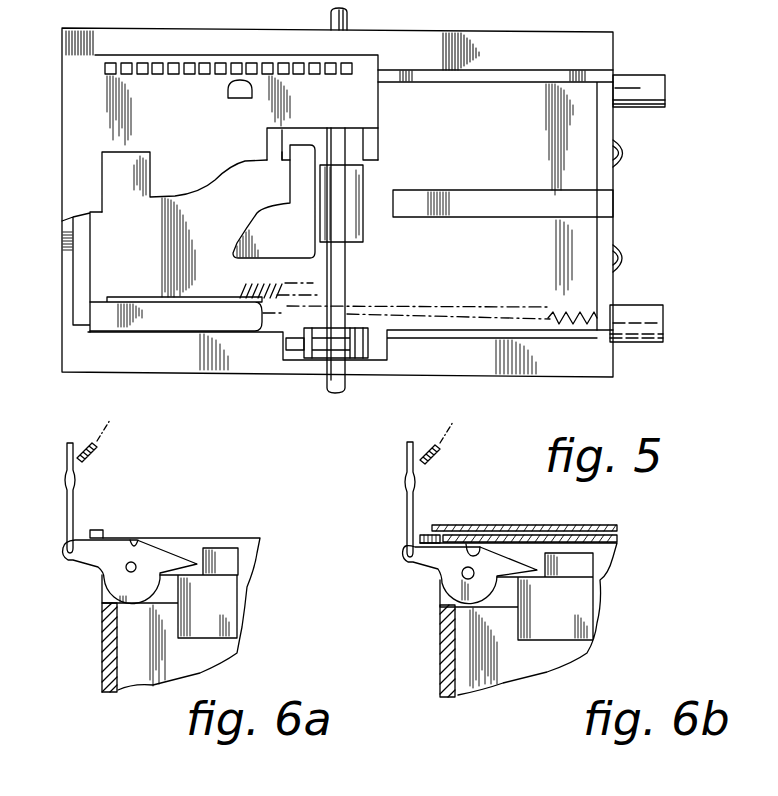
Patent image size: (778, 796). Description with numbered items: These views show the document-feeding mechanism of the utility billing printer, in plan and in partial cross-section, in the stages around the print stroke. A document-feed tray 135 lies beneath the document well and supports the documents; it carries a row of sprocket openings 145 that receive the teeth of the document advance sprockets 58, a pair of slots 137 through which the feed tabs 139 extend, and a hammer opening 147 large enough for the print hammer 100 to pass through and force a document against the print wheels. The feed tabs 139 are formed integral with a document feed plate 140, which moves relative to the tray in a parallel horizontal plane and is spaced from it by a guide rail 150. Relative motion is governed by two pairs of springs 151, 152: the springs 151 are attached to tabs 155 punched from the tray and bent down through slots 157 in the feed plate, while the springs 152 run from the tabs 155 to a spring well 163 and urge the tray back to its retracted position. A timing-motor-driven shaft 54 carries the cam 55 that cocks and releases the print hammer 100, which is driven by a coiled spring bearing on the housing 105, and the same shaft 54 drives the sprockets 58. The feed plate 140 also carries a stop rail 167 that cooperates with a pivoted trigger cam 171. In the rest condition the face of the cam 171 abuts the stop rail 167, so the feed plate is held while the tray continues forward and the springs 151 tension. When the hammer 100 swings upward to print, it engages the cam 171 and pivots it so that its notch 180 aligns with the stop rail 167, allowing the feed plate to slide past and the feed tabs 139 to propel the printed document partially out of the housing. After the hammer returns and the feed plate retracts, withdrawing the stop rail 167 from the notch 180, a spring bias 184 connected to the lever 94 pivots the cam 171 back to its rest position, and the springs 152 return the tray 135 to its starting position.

In FIG. 5C, the shaft 54 is at (346, 263).
In FIG. 5C, the cam 55 is at (358, 225).
In FIG. 5C, the document advance sprockets 58 is at (358, 328).
In FIG. 6A, the lever 94 is at (67, 510).
In FIG. 6B, the lever 94 is at (415, 507).
In FIG. 5C, the print hammer 100 is at (302, 245).
In FIG. 6A, the print hammer 100 is at (222, 603).
In FIG. 6B, the print hammer 100 is at (590, 597).
In FIG. 5C, the housing 105 is at (62, 322).
In FIG. 6A, the housing 105 is at (102, 648).
In FIG. 6B, the housing 105 is at (440, 655).
In FIG. 5C, the document-feed tray 135 is at (72, 92).
In FIG. 6B, the document-feed tray 135 is at (578, 528).
In FIG. 5C, the slots 137 is at (297, 133).
In FIG. 5C, the feed tabs 139 is at (282, 160).
In FIG. 5C, the document feed plate 140 is at (103, 255).
In FIG. 6B, the document feed plate 140 is at (618, 538).
In FIG. 5C, the sprocket openings 145 is at (270, 68).
In FIG. 5C, the hammer opening 147 is at (118, 160).
In FIG. 5C, the guide rail 150 is at (545, 195).
In FIG. 5C, the springs 151 is at (286, 288).
In FIG. 5C, the springs 152 is at (550, 314).
In FIG. 5C, the tabs 155 is at (228, 93).
In FIG. 5C, the slots 157 is at (168, 294).
In FIG. 5C, the spring well 163 is at (635, 76).
In FIG. 6B, the stop rail 167 is at (448, 580).
In FIG. 6A, the trigger cam 171 is at (98, 567).
In FIG. 6B, the trigger cam 171 is at (425, 570).
In FIG. 6A, the notch 180 is at (134, 541).
In FIG. 6A, the spring bias 184 is at (100, 442).
In FIG. 6B, the spring bias 184 is at (430, 456).